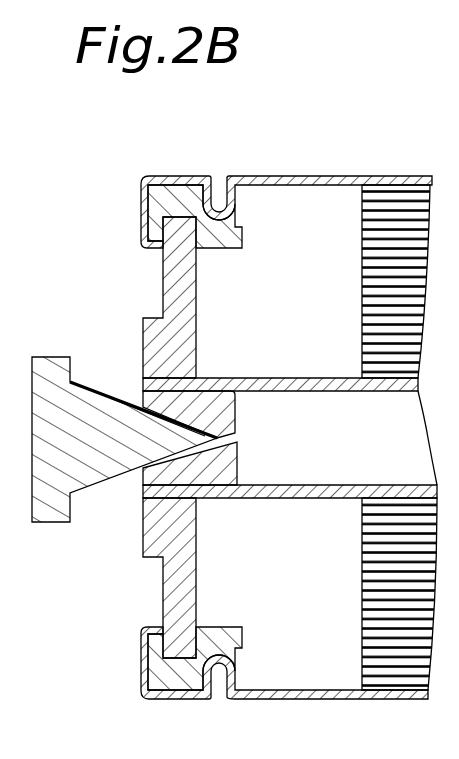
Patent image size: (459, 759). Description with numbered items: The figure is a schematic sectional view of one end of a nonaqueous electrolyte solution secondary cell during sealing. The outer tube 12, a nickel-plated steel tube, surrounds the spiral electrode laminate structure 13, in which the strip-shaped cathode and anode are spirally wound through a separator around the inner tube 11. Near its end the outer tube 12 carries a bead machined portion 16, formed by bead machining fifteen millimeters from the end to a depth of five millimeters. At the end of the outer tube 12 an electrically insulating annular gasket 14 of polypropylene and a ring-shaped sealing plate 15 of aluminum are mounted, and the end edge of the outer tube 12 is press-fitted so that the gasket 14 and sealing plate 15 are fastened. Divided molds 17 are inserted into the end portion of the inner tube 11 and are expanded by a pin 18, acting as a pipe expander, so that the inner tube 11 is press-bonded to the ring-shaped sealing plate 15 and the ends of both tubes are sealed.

The inner tube 11 is at (320, 378).
The outer tube 12 is at (313, 700).
The spiral electrode laminate structure 13 is at (389, 207).
The electrically insulating annular gasket 14 is at (243, 233).
The ring-shaped sealing plate 15 is at (163, 588).
The bead machined portion 16 is at (220, 181).
The divided molds 17 is at (221, 478).
The pin 18 is at (60, 357).